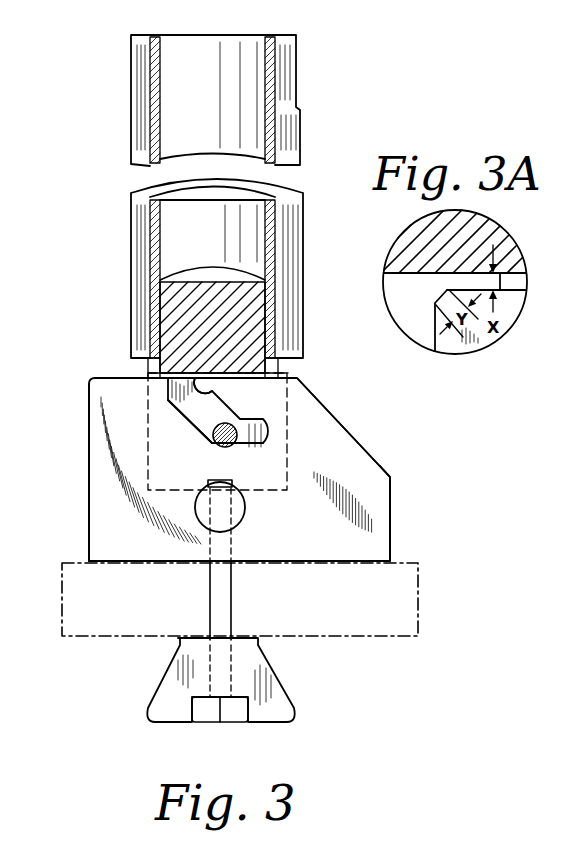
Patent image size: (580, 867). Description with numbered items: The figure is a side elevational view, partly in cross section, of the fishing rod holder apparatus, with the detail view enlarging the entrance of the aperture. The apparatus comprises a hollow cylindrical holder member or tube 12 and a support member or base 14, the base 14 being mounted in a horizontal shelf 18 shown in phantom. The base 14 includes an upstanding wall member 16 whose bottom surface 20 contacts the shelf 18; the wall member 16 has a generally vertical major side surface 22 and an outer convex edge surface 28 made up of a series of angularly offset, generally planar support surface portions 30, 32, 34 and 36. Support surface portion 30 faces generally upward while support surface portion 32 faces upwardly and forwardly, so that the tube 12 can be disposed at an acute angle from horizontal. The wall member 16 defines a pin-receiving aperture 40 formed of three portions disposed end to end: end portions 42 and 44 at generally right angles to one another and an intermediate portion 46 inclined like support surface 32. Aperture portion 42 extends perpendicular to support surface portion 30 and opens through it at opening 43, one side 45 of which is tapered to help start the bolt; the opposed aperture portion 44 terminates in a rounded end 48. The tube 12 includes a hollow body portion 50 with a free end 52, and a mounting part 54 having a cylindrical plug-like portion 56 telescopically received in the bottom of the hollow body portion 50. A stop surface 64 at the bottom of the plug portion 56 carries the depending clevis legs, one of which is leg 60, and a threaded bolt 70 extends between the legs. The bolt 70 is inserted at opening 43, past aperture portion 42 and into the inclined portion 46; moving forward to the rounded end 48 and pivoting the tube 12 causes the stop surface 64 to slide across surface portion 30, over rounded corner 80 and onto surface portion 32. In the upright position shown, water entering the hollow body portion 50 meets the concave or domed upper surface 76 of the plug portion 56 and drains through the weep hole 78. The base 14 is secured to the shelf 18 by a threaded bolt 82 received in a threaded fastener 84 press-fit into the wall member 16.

In FIG. 3, the hollow cylindrical holder member or tube 12 is at (128, 96).
In FIG. 3, the support member or base 14 is at (418, 548).
In FIG. 3, the upstanding wall member 16 is at (85, 533).
In FIG. 3, the horizontal shelf 18 is at (396, 601).
In FIG. 3, the bottom surface 20 is at (126, 563).
In FIG. 3, the major side surface 22 is at (373, 520).
In FIG. 3A, the major side surface 22 is at (450, 343).
In FIG. 3, the outer convex edge surface 28 is at (86, 372).
In FIG. 3, the support surface portion 30 is at (117, 378).
In FIG. 3A, the support surface portion 30 is at (526, 292).
In FIG. 3, the support surface portion 32 is at (340, 418).
In FIG. 3, the support surface portion 34 is at (88, 461).
In FIG. 3, the support surface portion 36 is at (402, 470).
In FIG. 3, the pin-receiving aperture 40 is at (248, 440).
In FIG. 3, the aperture end portion 42 is at (206, 392).
In FIG. 3, the opening 43 is at (178, 396).
In FIG. 3A, the opening 43 is at (396, 325).
In FIG. 3, the aperture end portion 44 is at (248, 420).
In FIG. 3A, the tapered side or corner 45 is at (445, 292).
In FIG. 3, the intermediate aperture portion 46 is at (190, 410).
In FIG. 3, the rounded end 48 is at (287, 435).
In FIG. 3, the hollow body portion 50 is at (293, 148).
In FIG. 3, the free end 52 is at (148, 37).
In FIG. 3, the mounting part 54 is at (300, 95).
In FIG. 3A, the cylindrical plug-like portion 56 is at (471, 259).
In FIG. 3, the clevis leg 60 is at (172, 483).
In FIG. 3A, the stop surface 64 is at (385, 283).
In FIG. 3, the threaded bolt 70 is at (217, 452).
In FIG. 3, the concave or domed upper surface 76 is at (243, 270).
In FIG. 3, the exit or weep hole 78 is at (304, 272).
In FIG. 3, the rounded corner 80 is at (295, 378).
In FIG. 3, the threaded bolt 82 is at (208, 713).
In FIG. 3, the threaded fastener 84 is at (240, 525).